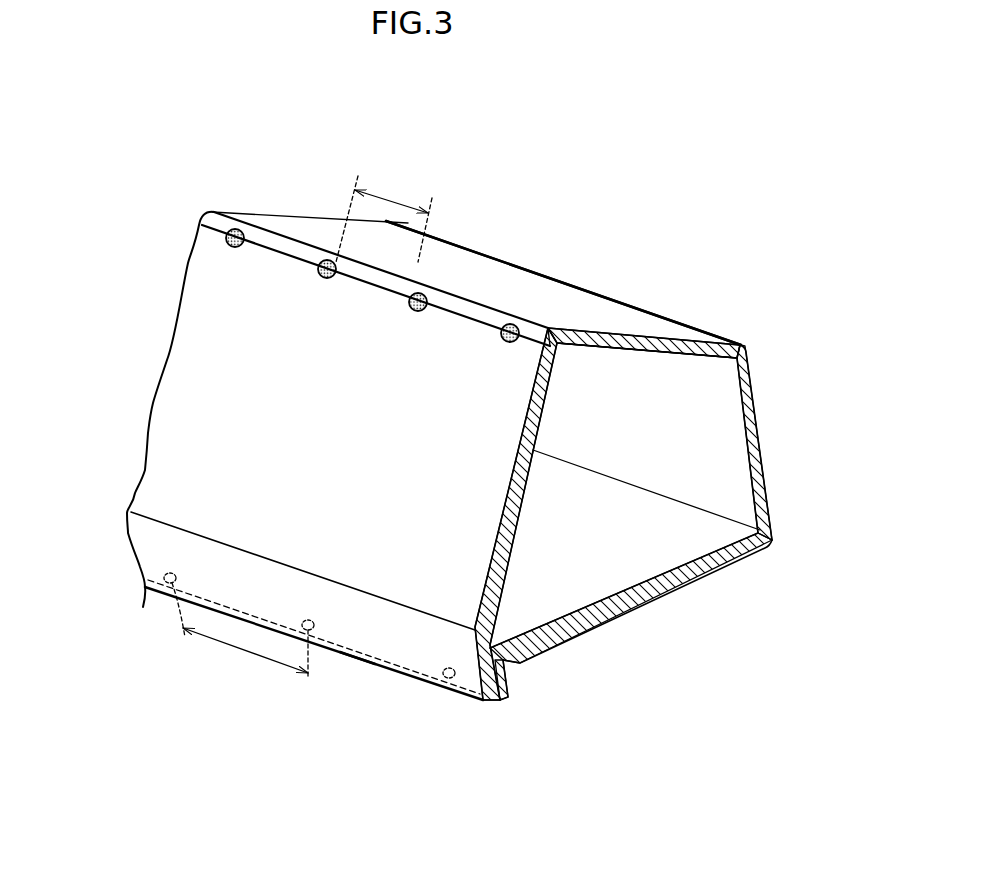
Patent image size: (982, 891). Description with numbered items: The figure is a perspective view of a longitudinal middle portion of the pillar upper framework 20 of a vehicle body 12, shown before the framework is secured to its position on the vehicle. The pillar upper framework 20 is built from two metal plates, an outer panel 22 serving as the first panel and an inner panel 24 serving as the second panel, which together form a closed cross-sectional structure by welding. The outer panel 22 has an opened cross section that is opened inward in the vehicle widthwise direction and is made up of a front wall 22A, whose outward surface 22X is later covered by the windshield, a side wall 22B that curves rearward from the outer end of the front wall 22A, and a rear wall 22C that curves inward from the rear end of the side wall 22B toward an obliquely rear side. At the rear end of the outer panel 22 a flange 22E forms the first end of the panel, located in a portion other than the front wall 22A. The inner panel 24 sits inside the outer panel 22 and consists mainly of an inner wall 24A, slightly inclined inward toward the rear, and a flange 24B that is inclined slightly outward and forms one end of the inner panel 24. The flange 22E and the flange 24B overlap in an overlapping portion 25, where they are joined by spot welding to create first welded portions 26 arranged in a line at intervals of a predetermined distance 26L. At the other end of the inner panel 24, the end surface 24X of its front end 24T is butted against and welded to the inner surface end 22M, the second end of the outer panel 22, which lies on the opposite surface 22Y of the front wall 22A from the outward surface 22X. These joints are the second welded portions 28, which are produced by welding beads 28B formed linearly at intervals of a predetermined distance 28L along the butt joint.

The vehicle body structure 12 is at (572, 165).
The pillar upper framework 20 is at (593, 227).
The outer panel 22 is at (630, 305).
The front wall 22A is at (648, 330).
The side wall 22B is at (723, 447).
The rear wall 22C is at (630, 568).
The flange 22E is at (510, 680).
The inner surface end 22M is at (558, 345).
The outward surface 22X is at (463, 260).
The opposite surface 22Y is at (653, 357).
The inner panel 24 is at (175, 403).
The inner wall 24A is at (183, 450).
The flange 24B is at (350, 638).
The front end 24T is at (531, 353).
The end surface 24X is at (560, 340).
The overlapping portion 25 is at (395, 647).
The first welded portions 26 is at (170, 577).
The predetermined distance 26L is at (238, 648).
The second welded portions 28 is at (232, 249).
The welding beads 28B is at (226, 239).
The predetermined distance 28L is at (397, 197).